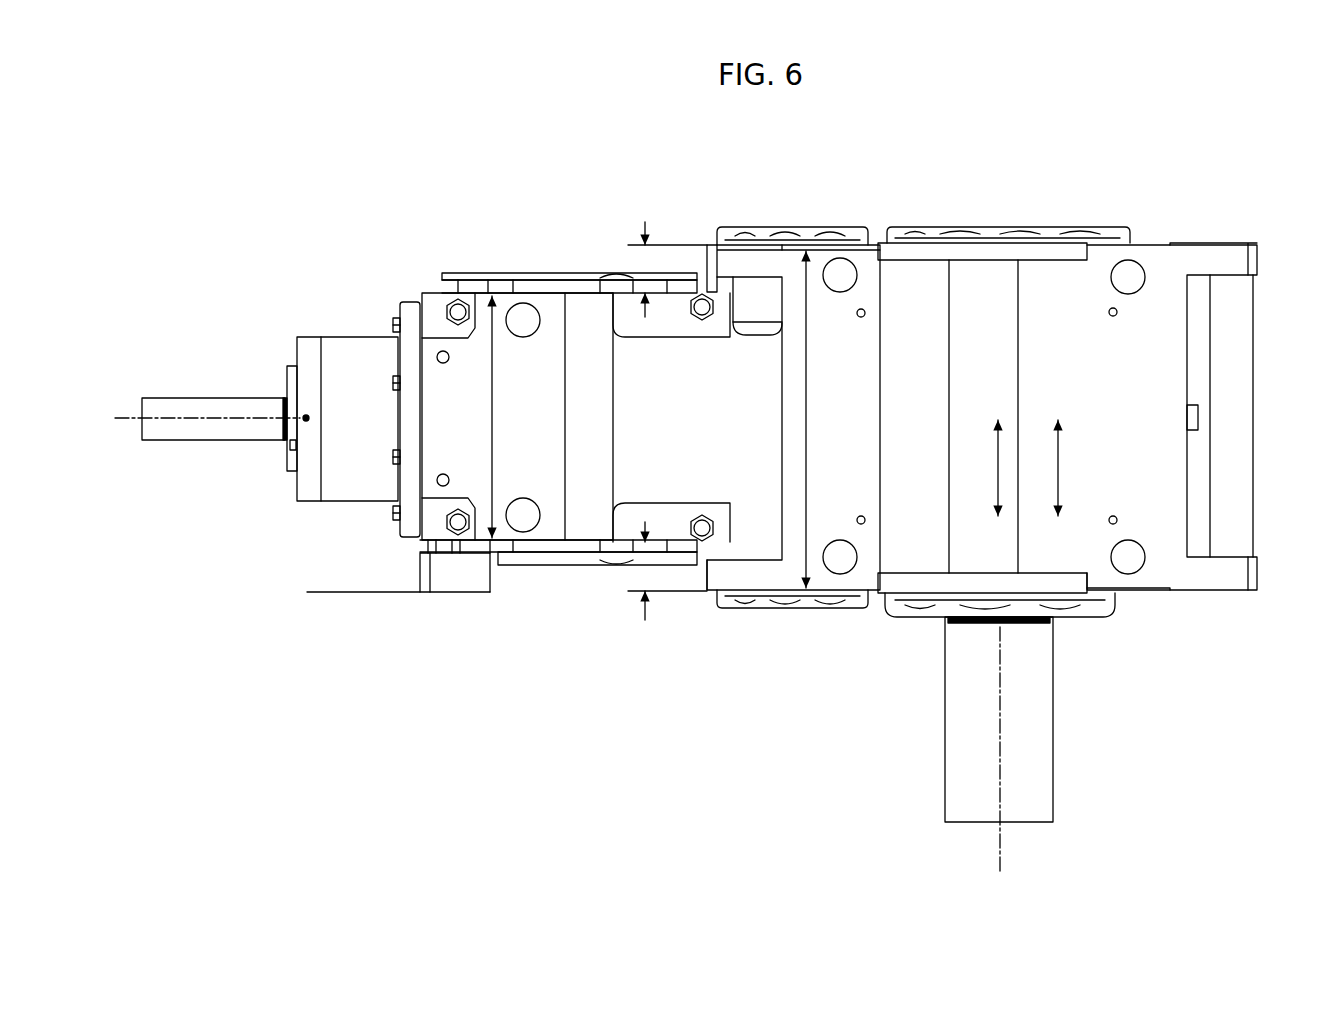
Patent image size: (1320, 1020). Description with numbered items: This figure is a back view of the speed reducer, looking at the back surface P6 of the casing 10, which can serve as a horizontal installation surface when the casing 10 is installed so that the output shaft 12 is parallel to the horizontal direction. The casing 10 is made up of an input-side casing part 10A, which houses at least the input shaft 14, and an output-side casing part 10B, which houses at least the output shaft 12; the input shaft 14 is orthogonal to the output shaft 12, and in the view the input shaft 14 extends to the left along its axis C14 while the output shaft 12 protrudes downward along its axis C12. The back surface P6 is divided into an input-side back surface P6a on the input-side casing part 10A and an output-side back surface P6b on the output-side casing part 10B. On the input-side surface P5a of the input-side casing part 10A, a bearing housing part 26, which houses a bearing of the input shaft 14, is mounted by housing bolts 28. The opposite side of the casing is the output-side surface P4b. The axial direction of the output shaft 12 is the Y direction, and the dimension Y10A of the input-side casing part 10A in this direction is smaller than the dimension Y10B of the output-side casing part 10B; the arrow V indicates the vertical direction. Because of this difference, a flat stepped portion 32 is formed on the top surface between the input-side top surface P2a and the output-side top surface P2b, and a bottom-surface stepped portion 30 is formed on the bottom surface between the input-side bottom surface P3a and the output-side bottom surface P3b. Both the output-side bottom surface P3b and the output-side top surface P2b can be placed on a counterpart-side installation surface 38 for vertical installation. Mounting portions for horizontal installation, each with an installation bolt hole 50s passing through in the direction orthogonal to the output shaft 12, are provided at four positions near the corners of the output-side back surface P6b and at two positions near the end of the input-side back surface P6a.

The casing 10 is at (1088, 166).
The input-side casing part 10A is at (461, 266).
The output-side casing part 10B is at (981, 220).
The output shaft 12 is at (1040, 729).
The input shaft 14 is at (222, 406).
The bearing housing part 26 is at (348, 488).
The housing bolts 28 is at (392, 513).
The bottom-surface stepped portion 30 is at (695, 578).
The flat stepped portion 32 is at (699, 262).
The counterpart-side installation surface 38 is at (322, 592).
The installation bolt hole 50s is at (526, 331).
The axis of output shaft C12 is at (1002, 857).
The axis of input shaft C14 is at (125, 418).
The input-side top surface P2a is at (546, 289).
The output-side top surface P2b is at (1151, 240).
The input-side bottom surface P3a is at (547, 569).
The output-side bottom surface P3b is at (1153, 594).
The output-side surface P4b is at (1259, 367).
The input-side surface P5a is at (410, 366).
The input-side back surface P6a is at (658, 428).
The output-side back surface P6b is at (906, 428).
The back surface P6 is at (730, 752).
The dimension of the input-side casing part in the Y direction Y10A is at (493, 432).
The dimension of the output-side casing part in the Y direction Y10B is at (808, 378).
The Y direction Y is at (996, 472).
The vertical direction V is at (1061, 472).